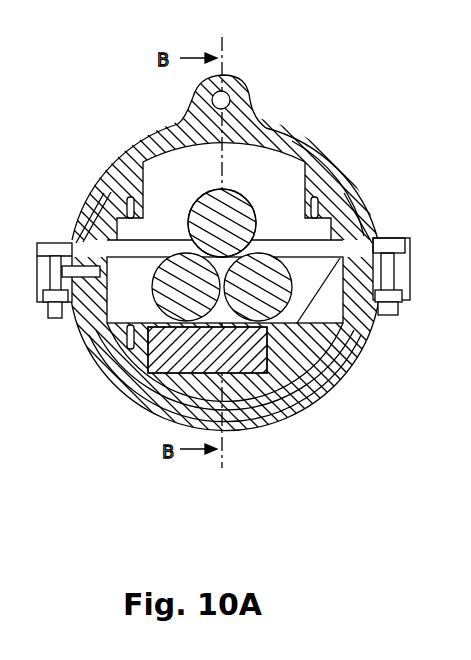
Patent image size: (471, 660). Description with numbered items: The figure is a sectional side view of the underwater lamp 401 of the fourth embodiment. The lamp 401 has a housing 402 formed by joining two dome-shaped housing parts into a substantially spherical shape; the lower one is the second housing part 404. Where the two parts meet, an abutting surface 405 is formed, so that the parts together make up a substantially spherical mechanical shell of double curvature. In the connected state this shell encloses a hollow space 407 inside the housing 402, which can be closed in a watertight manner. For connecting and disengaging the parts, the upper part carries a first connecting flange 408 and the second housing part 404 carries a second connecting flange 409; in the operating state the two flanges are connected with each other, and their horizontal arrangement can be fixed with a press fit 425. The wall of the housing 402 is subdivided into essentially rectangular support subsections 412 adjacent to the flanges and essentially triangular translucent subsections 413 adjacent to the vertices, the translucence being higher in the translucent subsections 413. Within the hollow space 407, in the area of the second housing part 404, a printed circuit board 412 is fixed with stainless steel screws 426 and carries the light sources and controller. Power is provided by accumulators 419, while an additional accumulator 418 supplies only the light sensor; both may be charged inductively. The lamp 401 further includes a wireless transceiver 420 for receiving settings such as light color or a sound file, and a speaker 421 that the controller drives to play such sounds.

The lamp 401 is at (86, 139).
The housing 402 is at (317, 180).
The second housing part 404 is at (353, 327).
The abutting surface 405 is at (88, 287).
The hollow space 407 is at (258, 173).
The first connecting flange 408 is at (402, 250).
The second connecting flange 409 is at (402, 280).
The support subsection 412 is at (100, 195).
The translucent subsection 413 is at (200, 212).
The additional accumulator 418 is at (196, 198).
The accumulators 419 is at (262, 320).
The wireless transceiver 420 is at (330, 373).
The speaker 421 is at (162, 407).
The press fit 425 is at (92, 250).
The stainless steel screws 426 is at (103, 377).